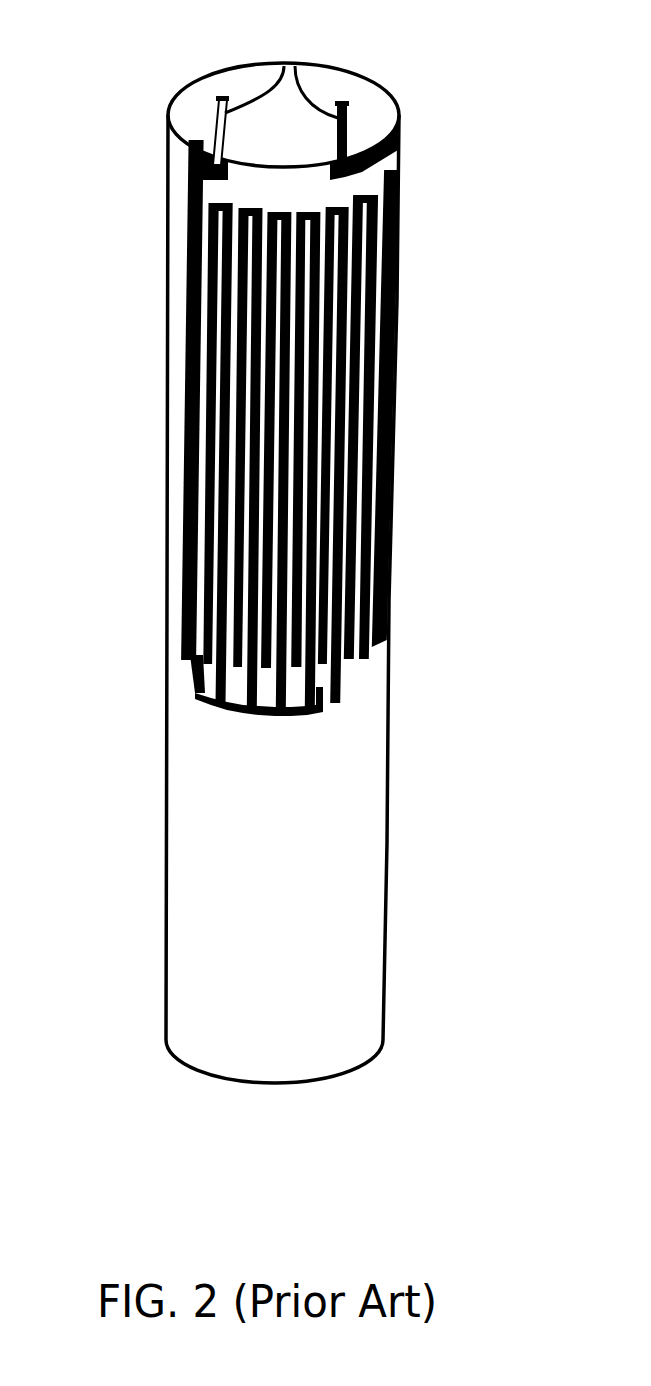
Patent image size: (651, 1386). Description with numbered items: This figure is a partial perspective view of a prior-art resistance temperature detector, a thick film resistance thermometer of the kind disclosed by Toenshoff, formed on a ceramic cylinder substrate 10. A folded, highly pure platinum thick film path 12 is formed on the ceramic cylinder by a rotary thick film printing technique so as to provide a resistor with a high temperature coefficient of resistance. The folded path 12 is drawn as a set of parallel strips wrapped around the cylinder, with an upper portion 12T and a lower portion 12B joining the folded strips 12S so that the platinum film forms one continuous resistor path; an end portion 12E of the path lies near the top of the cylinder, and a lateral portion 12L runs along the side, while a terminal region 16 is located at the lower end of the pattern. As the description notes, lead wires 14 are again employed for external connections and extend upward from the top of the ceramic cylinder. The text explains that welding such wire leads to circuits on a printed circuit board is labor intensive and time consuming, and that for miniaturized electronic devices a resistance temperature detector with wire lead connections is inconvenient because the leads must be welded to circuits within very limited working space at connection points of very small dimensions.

The cylindrical substrate 10 is at (360, 843).
The interdigitated electrode pattern 12 is at (294, 444).
The electrode top bus bar 12T is at (186, 372).
The electrode bottom bus bar 12B is at (196, 714).
The electrode bottom strip 12S is at (240, 713).
The electrode end pad 12E is at (368, 193).
The electrode lead bar 12L is at (393, 568).
The lead wires 14 is at (295, 66).
The terminal gap 16 is at (322, 683).